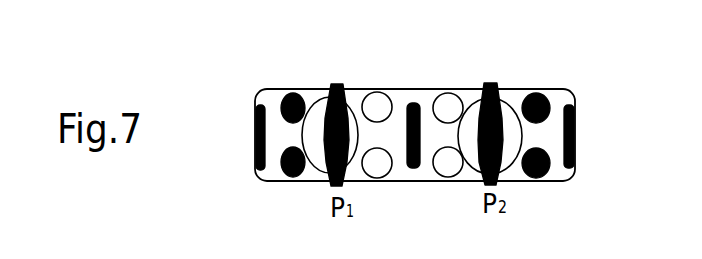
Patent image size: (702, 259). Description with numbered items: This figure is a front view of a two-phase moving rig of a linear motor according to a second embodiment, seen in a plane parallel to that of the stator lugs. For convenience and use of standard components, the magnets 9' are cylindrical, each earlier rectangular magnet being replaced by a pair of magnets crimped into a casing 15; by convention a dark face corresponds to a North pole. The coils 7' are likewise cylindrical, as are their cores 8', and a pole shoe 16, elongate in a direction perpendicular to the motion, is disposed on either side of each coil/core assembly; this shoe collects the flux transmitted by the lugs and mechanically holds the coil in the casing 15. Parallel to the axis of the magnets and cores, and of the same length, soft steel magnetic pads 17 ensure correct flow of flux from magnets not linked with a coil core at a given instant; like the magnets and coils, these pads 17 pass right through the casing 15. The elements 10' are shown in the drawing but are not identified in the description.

The casing 15 is at (263, 90).
The soft steel magnetic pads 17 is at (577, 133).
The coils 7' is at (412, 92).
The pistons 10' is at (416, 95).
The cores 8' is at (336, 99).
The pole shoe 16 is at (482, 98).
The magnets 9' is at (412, 89).